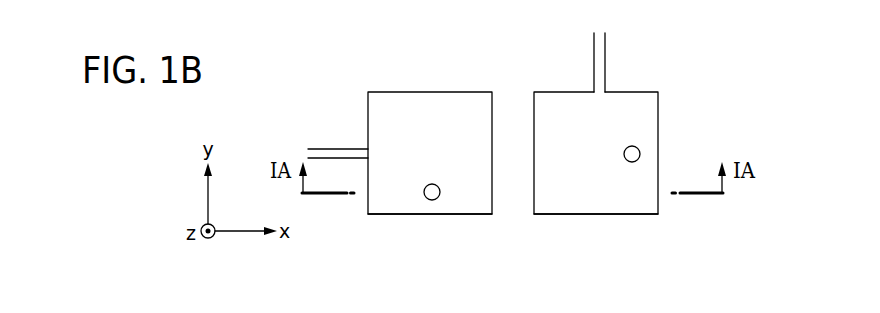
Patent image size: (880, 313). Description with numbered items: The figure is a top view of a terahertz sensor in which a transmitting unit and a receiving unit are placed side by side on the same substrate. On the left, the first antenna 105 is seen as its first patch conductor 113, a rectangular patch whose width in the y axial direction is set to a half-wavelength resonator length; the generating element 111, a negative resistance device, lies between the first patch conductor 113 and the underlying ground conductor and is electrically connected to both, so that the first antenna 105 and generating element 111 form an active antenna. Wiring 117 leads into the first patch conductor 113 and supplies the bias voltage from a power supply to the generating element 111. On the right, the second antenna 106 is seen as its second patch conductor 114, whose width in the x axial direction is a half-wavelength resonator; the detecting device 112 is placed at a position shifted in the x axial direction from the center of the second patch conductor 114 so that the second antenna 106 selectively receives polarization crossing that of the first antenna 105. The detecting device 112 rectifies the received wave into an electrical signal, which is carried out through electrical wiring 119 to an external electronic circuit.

The first antenna 105 is at (403, 90).
The second antenna 106 is at (622, 88).
The generating element 111 is at (430, 200).
The detecting device 112 is at (636, 151).
The first patch conductor 113 is at (473, 207).
The second patch conductor 114 is at (630, 207).
The wiring 117 is at (343, 153).
The electrical wiring 119 is at (597, 58).